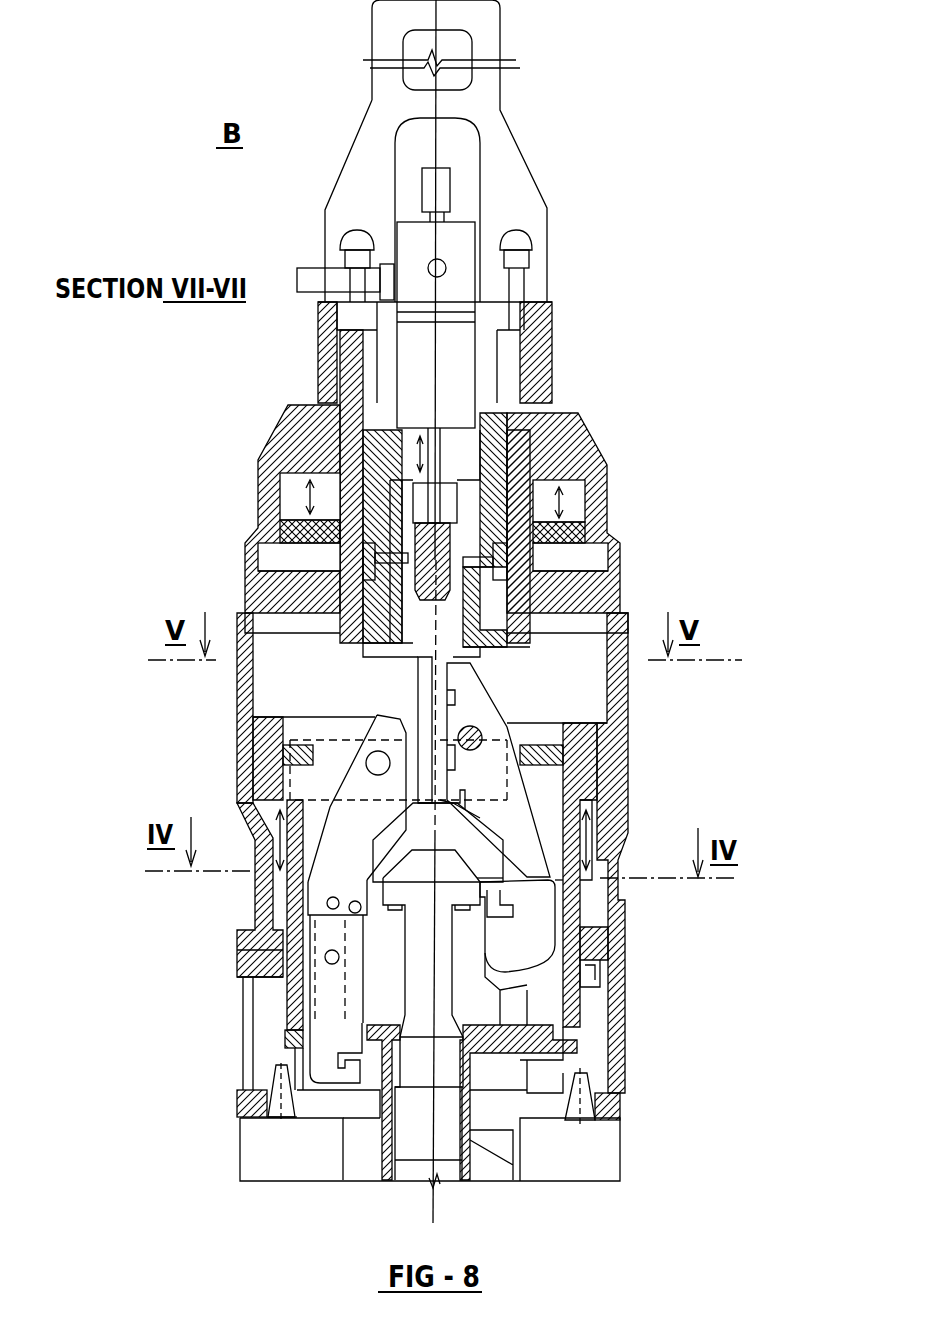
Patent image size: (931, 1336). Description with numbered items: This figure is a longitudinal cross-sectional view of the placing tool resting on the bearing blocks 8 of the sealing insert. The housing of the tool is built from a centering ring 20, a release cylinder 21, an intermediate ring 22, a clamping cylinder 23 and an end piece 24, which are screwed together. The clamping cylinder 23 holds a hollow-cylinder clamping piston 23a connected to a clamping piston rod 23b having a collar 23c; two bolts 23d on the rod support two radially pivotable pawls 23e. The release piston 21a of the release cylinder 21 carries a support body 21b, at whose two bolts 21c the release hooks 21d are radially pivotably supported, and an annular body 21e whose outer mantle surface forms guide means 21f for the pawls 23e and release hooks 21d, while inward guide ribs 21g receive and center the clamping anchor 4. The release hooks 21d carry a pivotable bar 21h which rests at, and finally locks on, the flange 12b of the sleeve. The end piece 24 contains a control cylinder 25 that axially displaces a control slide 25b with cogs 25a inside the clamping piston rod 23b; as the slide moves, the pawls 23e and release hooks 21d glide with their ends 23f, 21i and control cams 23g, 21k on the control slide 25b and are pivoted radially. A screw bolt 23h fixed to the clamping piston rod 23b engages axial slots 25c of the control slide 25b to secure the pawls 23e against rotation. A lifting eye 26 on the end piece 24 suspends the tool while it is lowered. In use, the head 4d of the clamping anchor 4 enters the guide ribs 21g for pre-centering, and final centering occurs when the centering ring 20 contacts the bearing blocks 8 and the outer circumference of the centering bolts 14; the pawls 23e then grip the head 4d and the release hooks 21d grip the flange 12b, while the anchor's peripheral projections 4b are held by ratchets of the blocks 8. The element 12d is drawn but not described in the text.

The clamping anchor 4 is at (423, 932).
The projections 4b is at (480, 1157).
The head 4d is at (447, 857).
The bearing blocks 8 is at (600, 1148).
The flange 12b is at (490, 1051).
The pedestal 12d is at (500, 1128).
The centering bolts 14 is at (282, 1112).
The centering ring 20 is at (268, 962).
The release cylinder 21 is at (255, 792).
The release piston 21a is at (557, 798).
The support body 21b is at (578, 760).
The bolts 21c is at (385, 766).
The release hooks 21d is at (350, 887).
The annular body 21e is at (290, 1040).
The guide means 21f is at (500, 1000).
The guide ribs 21g is at (530, 1077).
The pivotable bar 21h is at (320, 1000).
The ends 21i is at (375, 715).
The control cams 21k is at (345, 787).
The intermediate ring 22 is at (243, 608).
The clamping cylinder 23 is at (300, 560).
The clamping piston 23a is at (300, 528).
The clamping piston rod 23b is at (380, 455).
The collar 23c is at (320, 402).
The bolts 23d is at (495, 737).
The pawls 23e is at (508, 820).
The ends 23f is at (457, 678).
The control cams 23g is at (453, 803).
The screw bolt 23h is at (500, 565).
The end piece 24 is at (548, 312).
The control cylinder 25 is at (457, 413).
The cogs 25a is at (453, 805).
The control slide 25b is at (480, 530).
The axial slots 25c is at (607, 565).
The lifting eye 26 is at (520, 218).